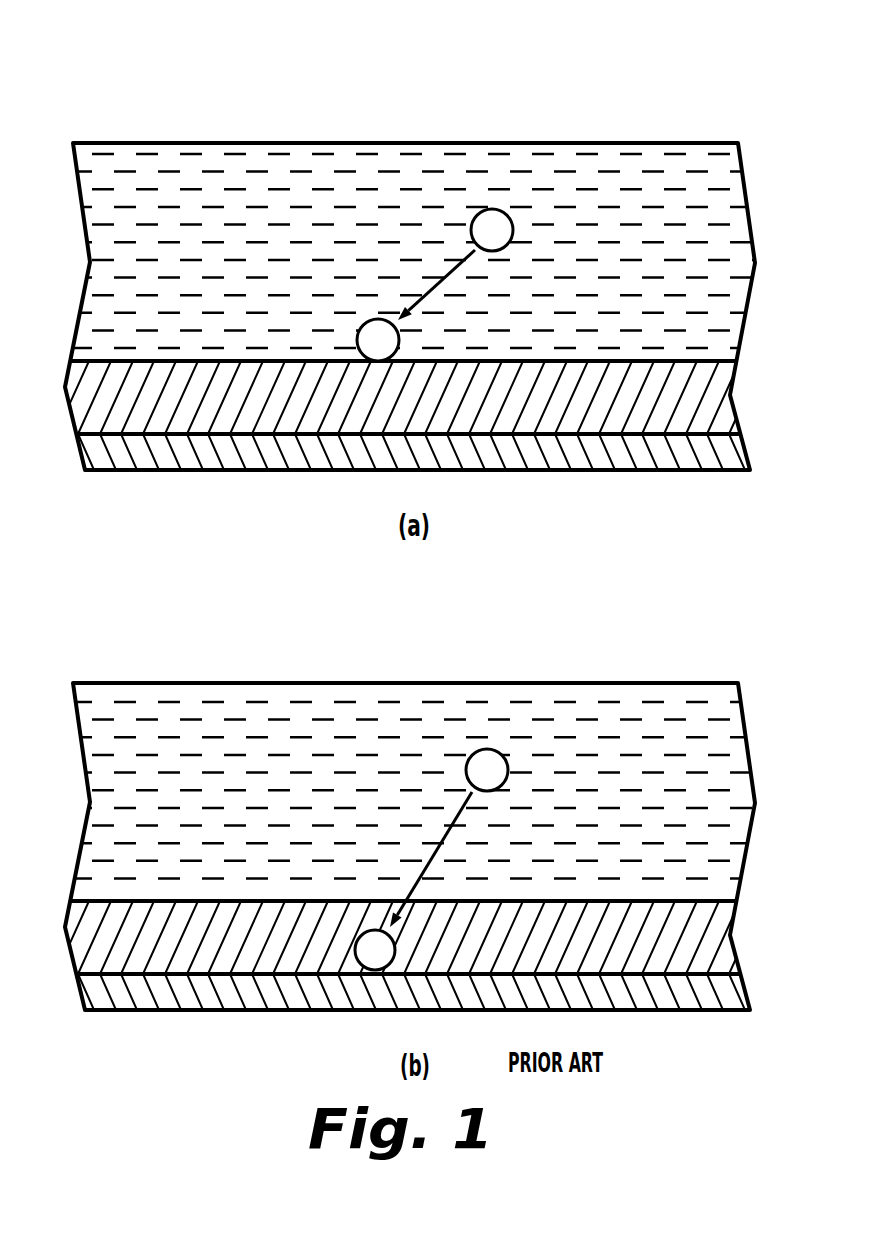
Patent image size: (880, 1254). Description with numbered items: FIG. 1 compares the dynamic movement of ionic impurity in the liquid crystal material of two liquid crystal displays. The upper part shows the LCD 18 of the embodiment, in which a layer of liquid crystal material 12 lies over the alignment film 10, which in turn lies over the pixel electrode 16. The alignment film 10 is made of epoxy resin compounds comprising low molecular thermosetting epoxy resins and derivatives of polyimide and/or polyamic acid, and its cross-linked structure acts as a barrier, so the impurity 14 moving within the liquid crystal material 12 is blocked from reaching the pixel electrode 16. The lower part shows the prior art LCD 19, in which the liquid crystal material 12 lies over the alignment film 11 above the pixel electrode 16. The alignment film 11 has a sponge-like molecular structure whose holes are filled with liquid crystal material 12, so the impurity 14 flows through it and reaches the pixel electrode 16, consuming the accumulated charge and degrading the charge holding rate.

The alignment film 10 is at (718, 393).
The alignment film 11 is at (718, 933).
The liquid crystal material 12 is at (733, 233).
The impurity 14 is at (492, 225).
The pixel electrode 16 is at (722, 450).
The LCD 18 is at (756, 85).
The LCD 19 is at (756, 599).